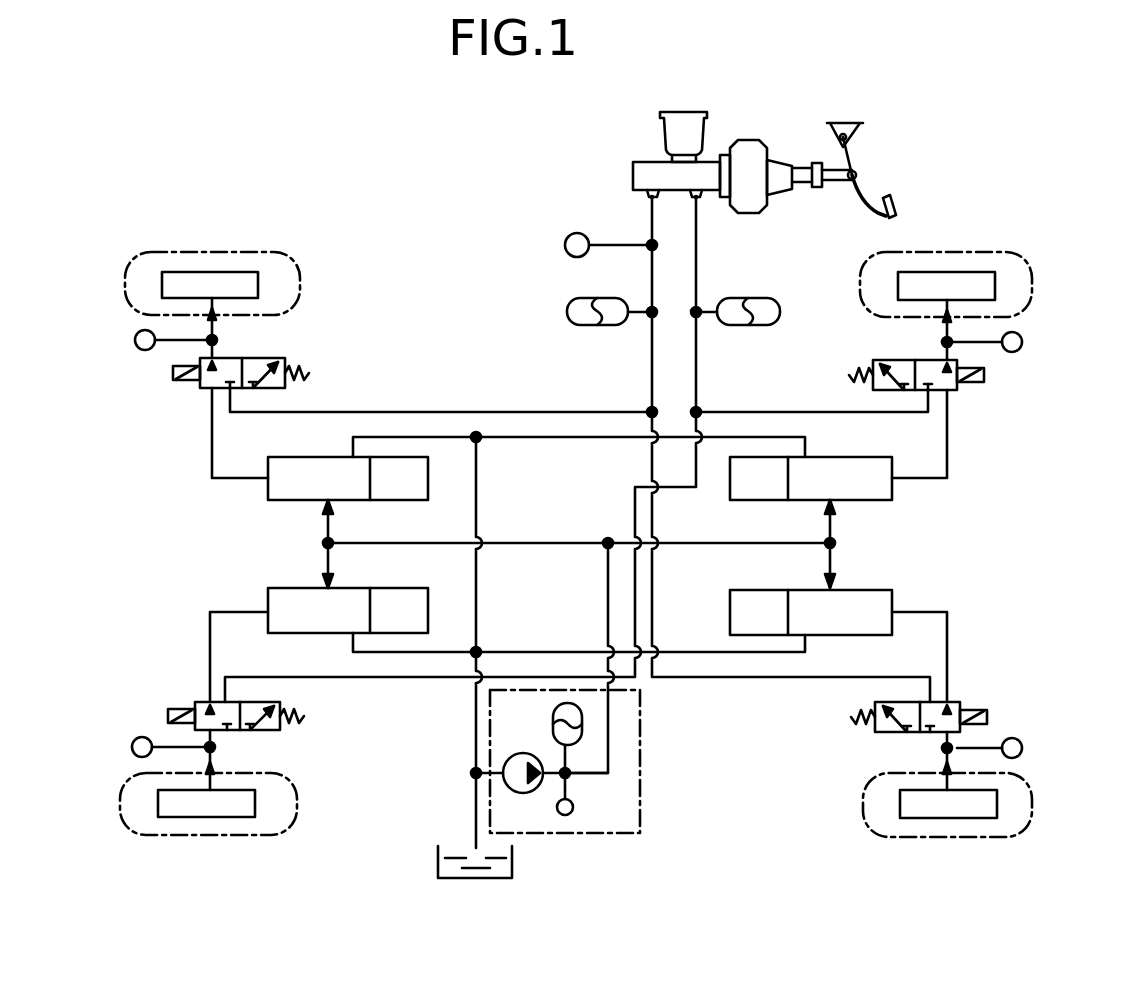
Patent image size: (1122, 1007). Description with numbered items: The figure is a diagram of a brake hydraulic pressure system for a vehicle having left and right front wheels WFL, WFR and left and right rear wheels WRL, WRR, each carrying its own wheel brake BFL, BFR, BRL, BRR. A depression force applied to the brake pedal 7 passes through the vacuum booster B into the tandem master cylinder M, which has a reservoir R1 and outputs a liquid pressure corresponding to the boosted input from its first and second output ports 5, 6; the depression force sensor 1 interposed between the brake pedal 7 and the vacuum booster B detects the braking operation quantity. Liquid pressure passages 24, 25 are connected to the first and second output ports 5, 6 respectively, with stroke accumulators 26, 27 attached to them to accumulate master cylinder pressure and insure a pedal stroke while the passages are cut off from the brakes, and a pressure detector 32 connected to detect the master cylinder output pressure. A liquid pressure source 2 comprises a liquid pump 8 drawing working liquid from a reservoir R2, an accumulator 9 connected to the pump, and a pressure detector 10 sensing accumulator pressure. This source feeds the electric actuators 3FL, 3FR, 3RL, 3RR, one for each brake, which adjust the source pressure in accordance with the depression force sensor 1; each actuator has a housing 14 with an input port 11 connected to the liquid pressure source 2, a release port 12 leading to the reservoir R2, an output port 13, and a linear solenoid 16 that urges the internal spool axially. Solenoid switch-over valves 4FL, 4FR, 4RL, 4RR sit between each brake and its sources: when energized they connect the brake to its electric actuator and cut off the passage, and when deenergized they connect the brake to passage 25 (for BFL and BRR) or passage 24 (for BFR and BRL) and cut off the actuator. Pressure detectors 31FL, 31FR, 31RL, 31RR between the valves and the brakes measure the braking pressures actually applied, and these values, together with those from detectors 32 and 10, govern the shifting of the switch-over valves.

The depression force sensor 1 is at (817, 188).
The brake pedal 7 is at (895, 213).
The master cylinder M is at (657, 163).
The reservoir R1 is at (694, 133).
The vacuum booster B is at (756, 163).
The first output port 5 is at (642, 200).
The second output port 6 is at (700, 196).
The liquid pressure passage 24 is at (651, 357).
The liquid pressure passage 25 is at (697, 362).
The stroke accumulator 26 is at (566, 319).
The stroke accumulator 27 is at (782, 313).
The pressure detector 32 is at (568, 254).
The electric actuator 3FR is at (297, 454).
The electric actuator 3FL is at (270, 585).
The electric actuator 3RR is at (857, 433).
The electric actuator 3RL is at (862, 588).
The input port 11 is at (333, 584).
The release port 12 is at (348, 636).
The output port 13 is at (265, 615).
The housing 14 is at (305, 593).
The linear solenoid 16 is at (405, 596).
The switch-over valve 4FR is at (276, 359).
The switch-over valve 4FL is at (205, 700).
The switch-over valve 4RR is at (957, 388).
The switch-over valve 4RL is at (955, 700).
The pressure detector 31FR is at (136, 332).
The pressure detector 31FL is at (140, 736).
The pressure detector 31RR is at (1023, 345).
The pressure detector 31RL is at (1015, 740).
The wheel brake BFR is at (184, 276).
The wheel brake BFL is at (252, 790).
The wheel brake BRR is at (987, 288).
The wheel brake BRL is at (985, 813).
The right front wheel WFR is at (265, 250).
The left front wheel WFL is at (293, 815).
The right rear wheel WRR is at (989, 250).
The left rear wheel WRL is at (1013, 772).
The liquid pressure source 2 is at (580, 761).
The liquid pump 8 is at (514, 754).
The accumulator 9 is at (578, 722).
The pressure detector 10 is at (573, 805).
The reservoir R2 is at (438, 858).